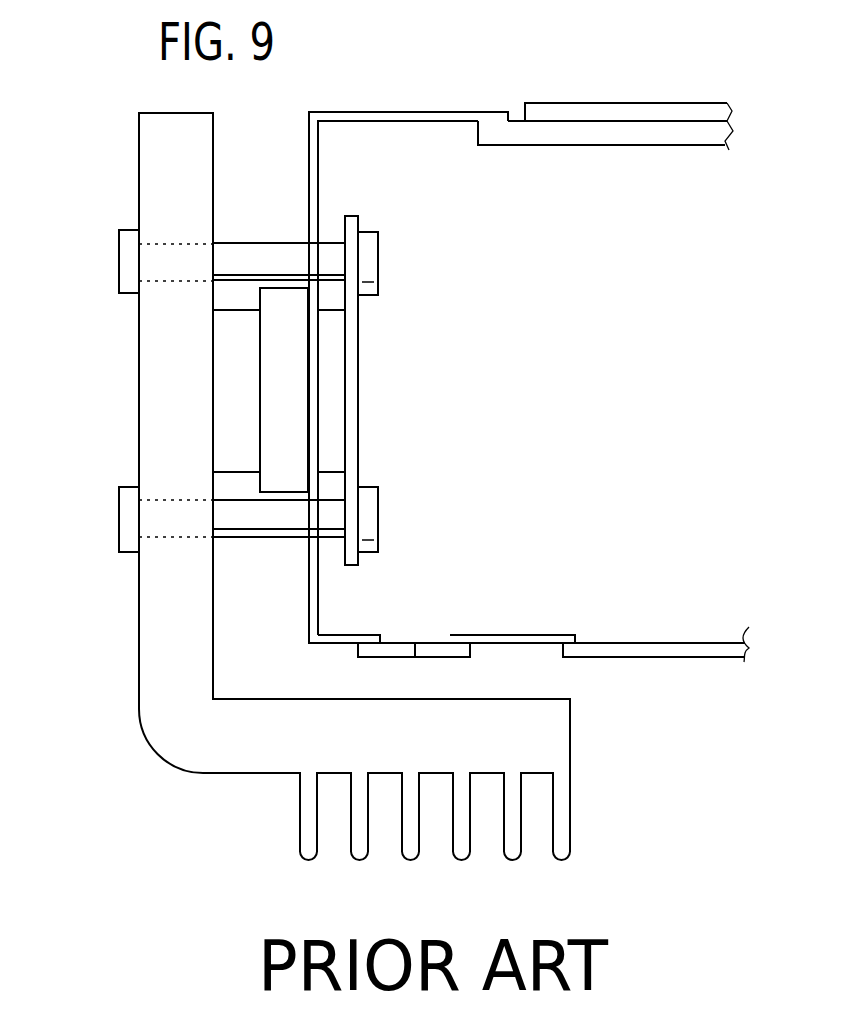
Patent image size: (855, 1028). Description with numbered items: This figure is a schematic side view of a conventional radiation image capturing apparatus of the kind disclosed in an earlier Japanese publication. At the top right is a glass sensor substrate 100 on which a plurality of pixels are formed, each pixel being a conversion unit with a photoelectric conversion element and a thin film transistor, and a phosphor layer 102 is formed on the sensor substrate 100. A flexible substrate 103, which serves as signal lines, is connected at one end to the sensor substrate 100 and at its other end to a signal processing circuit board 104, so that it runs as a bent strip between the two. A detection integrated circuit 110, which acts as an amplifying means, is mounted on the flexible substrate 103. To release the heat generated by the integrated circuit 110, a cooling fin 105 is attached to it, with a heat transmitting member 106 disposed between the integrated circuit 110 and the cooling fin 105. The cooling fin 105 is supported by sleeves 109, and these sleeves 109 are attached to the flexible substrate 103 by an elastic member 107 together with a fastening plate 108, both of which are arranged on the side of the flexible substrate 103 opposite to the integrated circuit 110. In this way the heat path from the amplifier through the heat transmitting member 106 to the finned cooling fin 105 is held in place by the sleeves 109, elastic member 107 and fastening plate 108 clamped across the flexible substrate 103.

The glass sensor substrate 100 is at (613, 133).
The phosphor layer 102 is at (603, 107).
The flexible substrate 103 is at (417, 121).
The signal processing circuit board 104 is at (660, 648).
The cooling fin 105 is at (155, 392).
The heat transmitting member 106 is at (228, 327).
The elastic member 107 is at (330, 437).
The fastening plate 108 is at (355, 393).
The sleeves 109 is at (130, 259).
The detection integrated circuit 110 is at (290, 478).